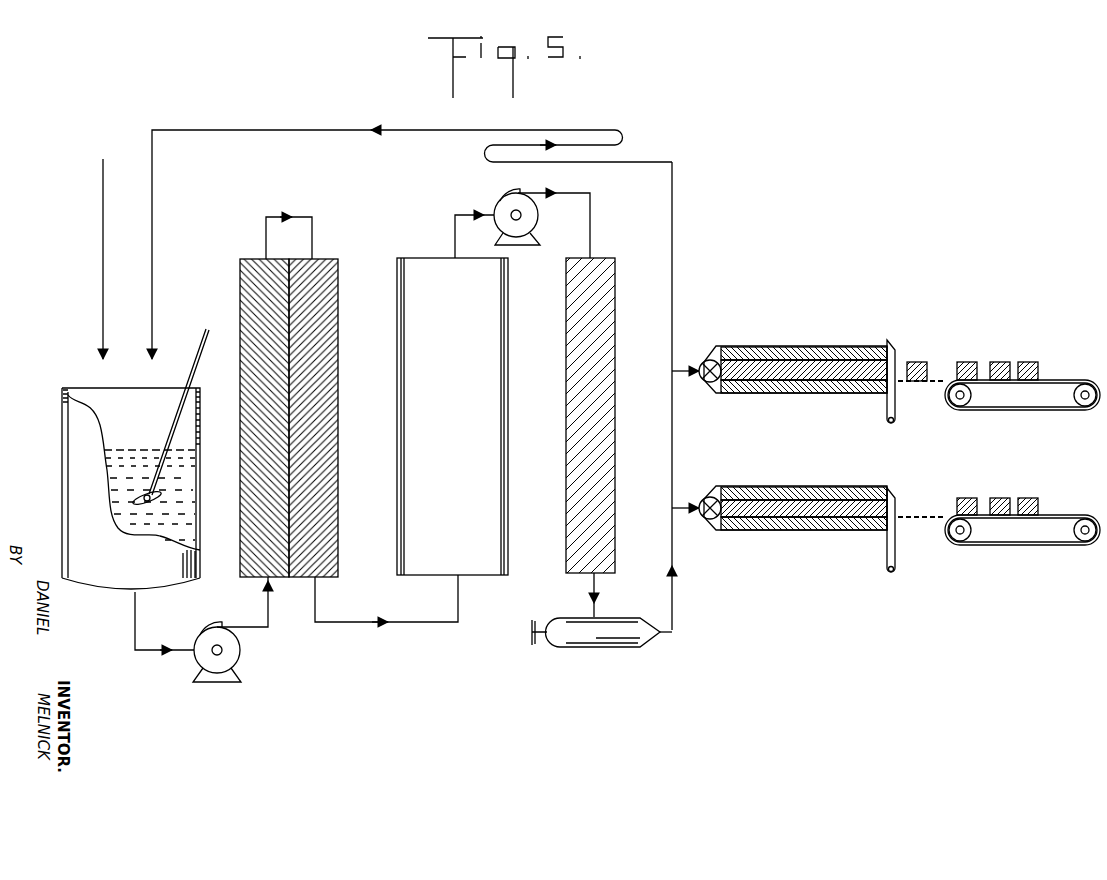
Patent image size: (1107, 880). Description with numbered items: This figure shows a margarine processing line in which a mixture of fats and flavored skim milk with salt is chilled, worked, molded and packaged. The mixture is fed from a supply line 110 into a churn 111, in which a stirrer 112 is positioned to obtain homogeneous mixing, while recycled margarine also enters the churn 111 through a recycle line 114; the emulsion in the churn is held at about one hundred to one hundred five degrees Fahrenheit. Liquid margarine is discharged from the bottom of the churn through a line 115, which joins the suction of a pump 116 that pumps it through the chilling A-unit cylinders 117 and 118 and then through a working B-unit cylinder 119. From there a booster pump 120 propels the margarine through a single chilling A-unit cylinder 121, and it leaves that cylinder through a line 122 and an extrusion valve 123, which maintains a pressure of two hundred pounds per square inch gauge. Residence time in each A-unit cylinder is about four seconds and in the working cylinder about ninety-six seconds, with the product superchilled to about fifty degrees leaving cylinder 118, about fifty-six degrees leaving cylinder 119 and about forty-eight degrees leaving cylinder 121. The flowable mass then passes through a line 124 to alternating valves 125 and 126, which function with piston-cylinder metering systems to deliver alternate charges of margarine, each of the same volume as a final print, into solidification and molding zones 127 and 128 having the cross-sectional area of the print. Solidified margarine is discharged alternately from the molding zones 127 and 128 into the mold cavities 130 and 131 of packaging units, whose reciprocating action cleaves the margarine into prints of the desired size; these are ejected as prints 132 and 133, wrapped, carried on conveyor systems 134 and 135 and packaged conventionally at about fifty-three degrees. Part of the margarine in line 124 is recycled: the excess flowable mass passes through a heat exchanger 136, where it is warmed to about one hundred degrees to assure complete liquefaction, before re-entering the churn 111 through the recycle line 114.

The supply line 110 is at (103, 205).
The churn 111 is at (62, 447).
The stirrer 112 is at (205, 331).
The recycle line 114 is at (152, 192).
The line 115 is at (135, 627).
The pump 116 is at (230, 657).
The chilling A-unit cylinder 117 is at (240, 433).
The chilling A-unit cylinder 118 is at (338, 433).
The working B-unit cylinder 119 is at (466, 393).
The booster pump 120 is at (530, 208).
The chilling A-unit cylinder 121 is at (600, 290).
The line 122 is at (594, 585).
The extrusion valve 123 is at (617, 641).
The line 124 is at (674, 293).
The alternating valve 125 is at (705, 382).
The alternating valve 126 is at (703, 519).
The solidification and molding zone 127 is at (830, 345).
The solidification and molding zone 128 is at (810, 485).
The mold cavity 130 is at (893, 357).
The mold cavity 131 is at (895, 500).
The print 132 is at (927, 362).
The print 133 is at (961, 497).
The conveyor system 134 is at (1035, 410).
The conveyor system 135 is at (1060, 515).
The heat exchanger 136 is at (620, 152).